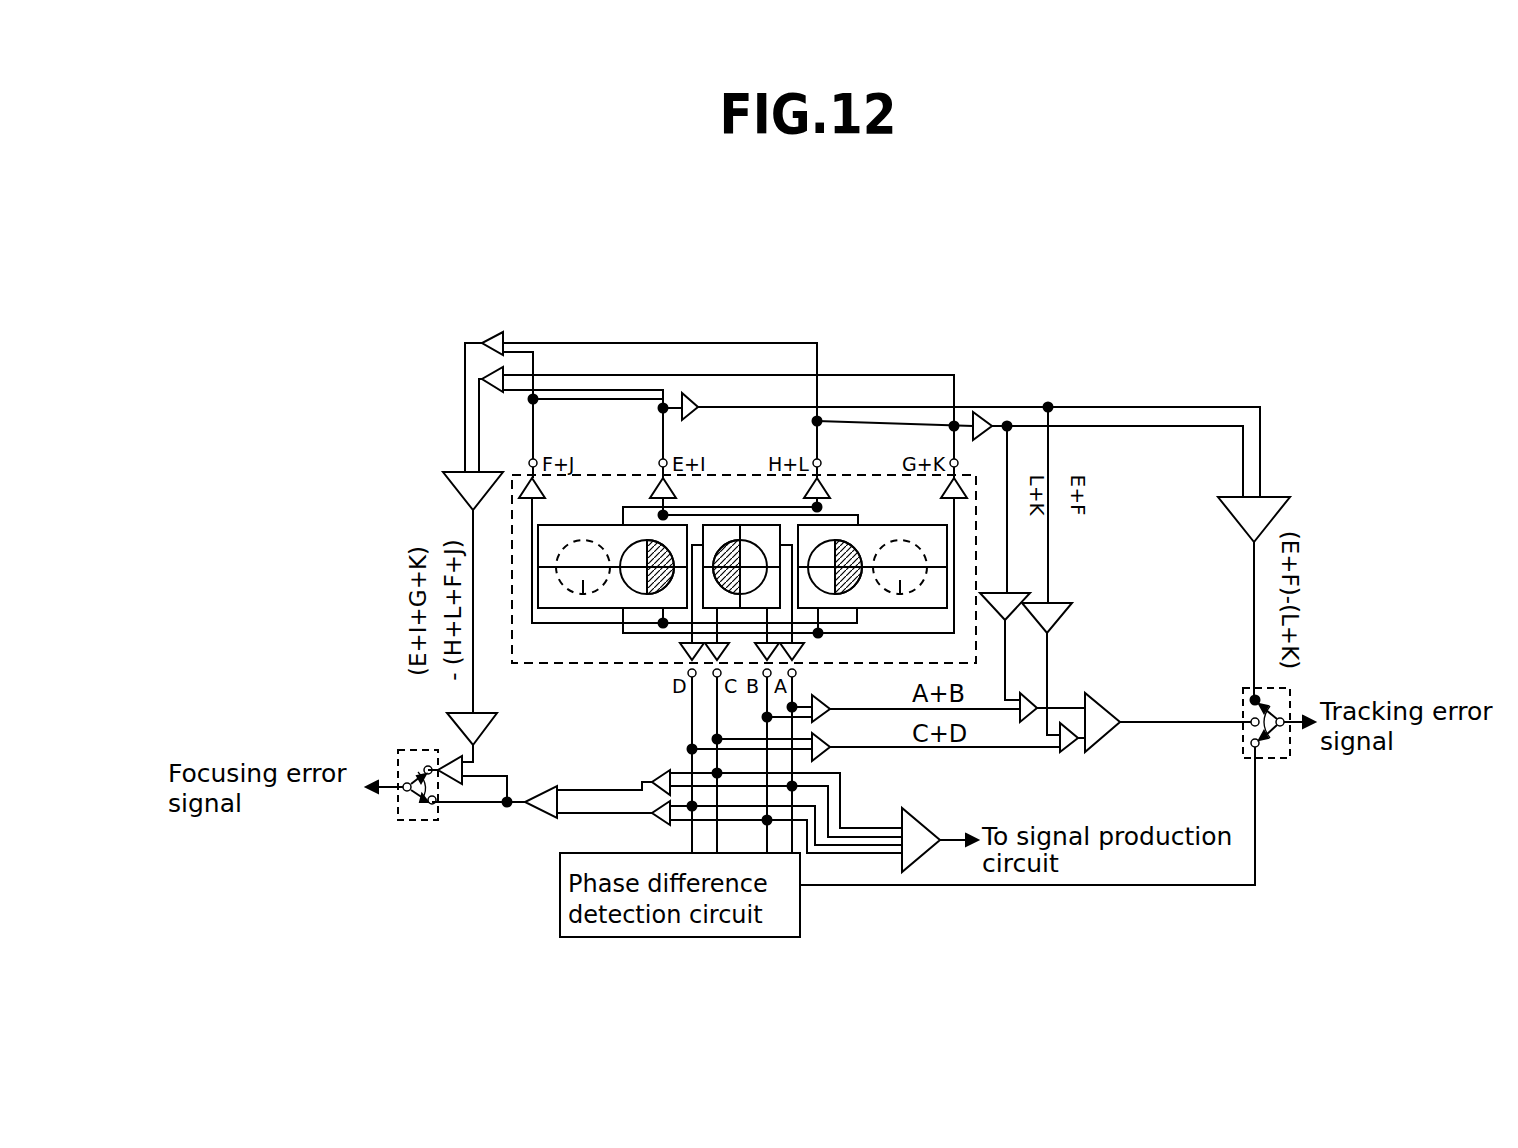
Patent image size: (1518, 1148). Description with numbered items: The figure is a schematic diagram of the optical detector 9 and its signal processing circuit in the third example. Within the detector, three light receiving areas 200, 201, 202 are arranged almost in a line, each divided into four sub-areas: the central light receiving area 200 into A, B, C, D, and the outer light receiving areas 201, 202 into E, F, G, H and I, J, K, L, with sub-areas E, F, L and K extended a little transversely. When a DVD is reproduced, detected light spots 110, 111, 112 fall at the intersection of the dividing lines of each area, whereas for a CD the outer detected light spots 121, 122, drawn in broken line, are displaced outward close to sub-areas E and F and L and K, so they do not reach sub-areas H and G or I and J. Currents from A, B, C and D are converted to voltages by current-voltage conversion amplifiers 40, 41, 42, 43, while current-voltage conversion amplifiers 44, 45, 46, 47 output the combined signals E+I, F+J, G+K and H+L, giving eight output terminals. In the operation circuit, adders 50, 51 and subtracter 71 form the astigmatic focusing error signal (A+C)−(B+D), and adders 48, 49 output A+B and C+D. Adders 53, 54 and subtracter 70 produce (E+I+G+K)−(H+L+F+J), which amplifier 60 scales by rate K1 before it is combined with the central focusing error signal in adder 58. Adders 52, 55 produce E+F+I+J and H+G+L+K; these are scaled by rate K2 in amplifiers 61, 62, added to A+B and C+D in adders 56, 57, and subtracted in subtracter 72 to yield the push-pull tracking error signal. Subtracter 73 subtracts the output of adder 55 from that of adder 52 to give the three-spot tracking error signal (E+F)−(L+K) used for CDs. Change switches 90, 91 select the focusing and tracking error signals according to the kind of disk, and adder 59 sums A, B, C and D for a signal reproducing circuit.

The optical detector 9 is at (976, 490).
The current-voltage conversion amplifier 40 is at (795, 655).
The current-voltage conversion amplifier 41 is at (770, 660).
The current-voltage conversion amplifier 42 is at (715, 655).
The current-voltage conversion amplifier 43 is at (690, 655).
The current-voltage conversion amplifier 44 is at (680, 490).
The current-voltage conversion amplifier 45 is at (545, 495).
The current-voltage conversion amplifier 46 is at (940, 490).
The current-voltage conversion amplifier 47 is at (832, 492).
The adder 48 is at (830, 716).
The adder 49 is at (830, 755).
The adder 50 is at (655, 770).
The adder 51 is at (650, 820).
The adder 52 is at (688, 392).
The adder 53 is at (485, 372).
The adder 54 is at (499, 333).
The adder 55 is at (977, 413).
The adder 56 is at (1025, 745).
The adder 57 is at (1066, 765).
The adder 58 is at (465, 763).
The adder 59 is at (915, 828).
The amplifier 60 is at (448, 716).
The amplifier 61 is at (1028, 590).
The amplifier 62 is at (1072, 610).
The subtracter 70 is at (445, 482).
The subtracter 71 is at (548, 820).
The subtracter 72 is at (1106, 760).
The subtracter 73 is at (1282, 495).
The change switch 90 is at (420, 822).
The change switch 91 is at (1272, 760).
The detected light spot 110 is at (760, 522).
The detected light spot 111 is at (870, 545).
The detected light spot 112 is at (625, 560).
The detected light spot 121 is at (902, 595).
The detected light spot 122 is at (580, 590).
The light receiving area 200 is at (745, 545).
The light receiving area 201 is at (963, 550).
The light receiving area 202 is at (548, 555).